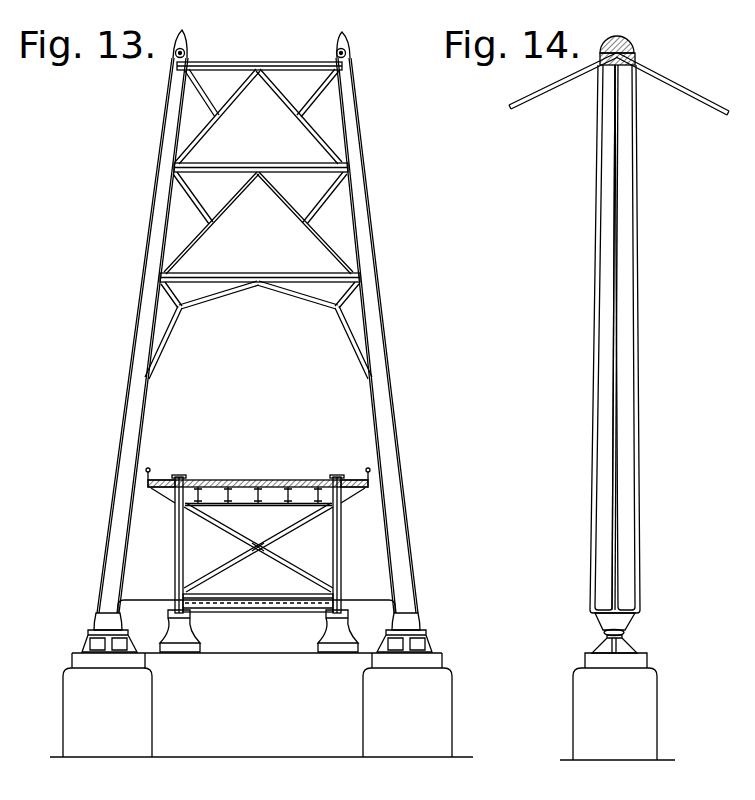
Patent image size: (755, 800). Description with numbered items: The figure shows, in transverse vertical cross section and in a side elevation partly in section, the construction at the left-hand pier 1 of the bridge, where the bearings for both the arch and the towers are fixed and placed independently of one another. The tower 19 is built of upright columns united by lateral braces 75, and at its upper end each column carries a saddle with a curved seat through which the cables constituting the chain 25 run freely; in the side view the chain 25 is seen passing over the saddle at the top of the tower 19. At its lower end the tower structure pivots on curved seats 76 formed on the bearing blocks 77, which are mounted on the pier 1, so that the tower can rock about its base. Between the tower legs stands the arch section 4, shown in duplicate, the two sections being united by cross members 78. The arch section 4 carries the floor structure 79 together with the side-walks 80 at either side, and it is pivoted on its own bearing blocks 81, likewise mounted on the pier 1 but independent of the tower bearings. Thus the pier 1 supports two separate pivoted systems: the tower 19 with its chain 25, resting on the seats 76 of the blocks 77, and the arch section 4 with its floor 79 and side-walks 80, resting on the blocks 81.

In FIG. 13, the left-hand pier 1 is at (440, 725).
In FIG. 14, the left-hand pier 1 is at (653, 717).
In FIG. 13, the arch section 4 is at (175, 545).
In FIG. 13, the tower 19 is at (127, 430).
In FIG. 14, the tower 19 is at (628, 438).
In FIG. 13, the chain 25 is at (186, 52).
In FIG. 14, the chain 25 is at (557, 82).
In FIG. 13, the lateral braces 75 is at (235, 197).
In FIG. 13, the curved seats 76 is at (97, 618).
In FIG. 14, the curved seats 76 is at (625, 638).
In FIG. 13, the bearing blocks 77 is at (85, 640).
In FIG. 14, the bearing blocks 77 is at (637, 648).
In FIG. 13, the cross members 78 is at (237, 563).
In FIG. 13, the floor structure 79 is at (220, 480).
In FIG. 13, the side-walks 80 is at (153, 480).
In FIG. 13, the bearing blocks 81 is at (190, 633).